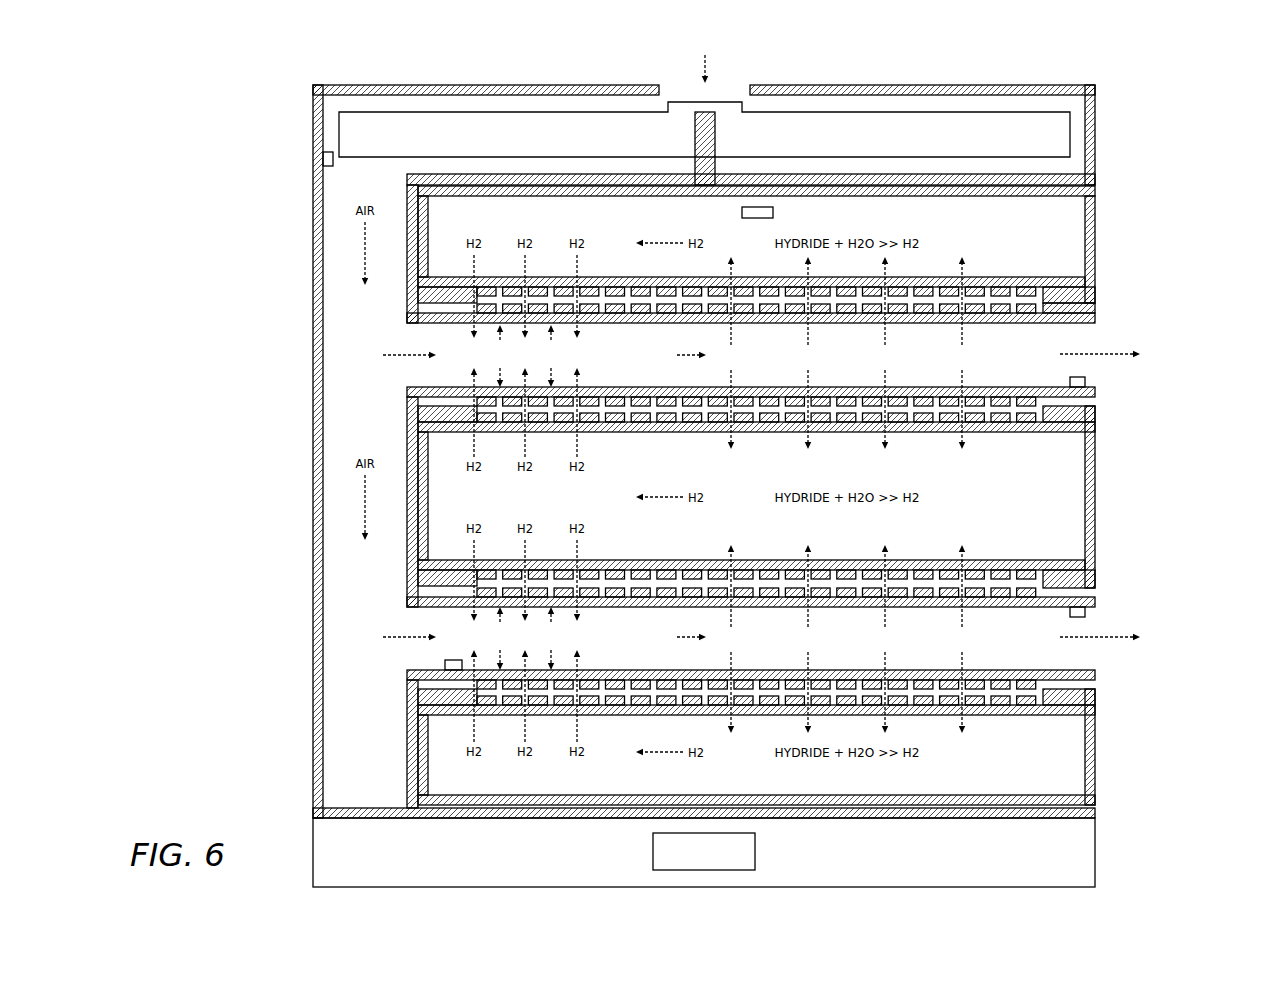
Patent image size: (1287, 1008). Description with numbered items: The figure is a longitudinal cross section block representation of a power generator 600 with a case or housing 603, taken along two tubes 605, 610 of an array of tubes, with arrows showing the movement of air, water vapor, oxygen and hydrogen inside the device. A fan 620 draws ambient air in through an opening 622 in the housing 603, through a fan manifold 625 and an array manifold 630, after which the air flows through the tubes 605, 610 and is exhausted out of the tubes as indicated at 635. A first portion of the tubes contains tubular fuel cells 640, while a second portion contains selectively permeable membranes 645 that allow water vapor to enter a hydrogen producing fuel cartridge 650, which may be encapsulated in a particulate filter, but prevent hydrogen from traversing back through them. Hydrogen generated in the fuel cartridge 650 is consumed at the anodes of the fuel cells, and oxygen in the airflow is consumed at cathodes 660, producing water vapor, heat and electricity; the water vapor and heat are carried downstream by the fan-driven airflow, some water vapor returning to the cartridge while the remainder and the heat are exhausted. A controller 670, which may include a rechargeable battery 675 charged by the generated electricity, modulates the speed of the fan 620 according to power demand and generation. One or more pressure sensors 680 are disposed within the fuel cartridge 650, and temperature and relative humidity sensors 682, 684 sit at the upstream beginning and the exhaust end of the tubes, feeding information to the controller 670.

The power generator 600 is at (1175, 64).
The housing 603 is at (555, 87).
The tube 605 is at (450, 372).
The tube 610 is at (452, 622).
The fan 620 is at (1072, 130).
The opening 622 is at (728, 87).
The fan manifold 625 is at (592, 100).
The array manifold 630 is at (332, 398).
The exhaust 635 is at (1108, 352).
The tubular fuel cells 640 is at (408, 319).
The selectively permeable membranes 645 is at (988, 327).
The hydrogen producing fuel cartridge 650 is at (1078, 237).
The cathodes 660 is at (433, 325).
The controller 670 is at (1075, 850).
The rechargeable battery 675 is at (757, 850).
The pressure sensor 680 is at (775, 212).
The temperature and humidity sensors 682 is at (321, 160).
The temperature and humidity sensors 684 is at (1086, 380).